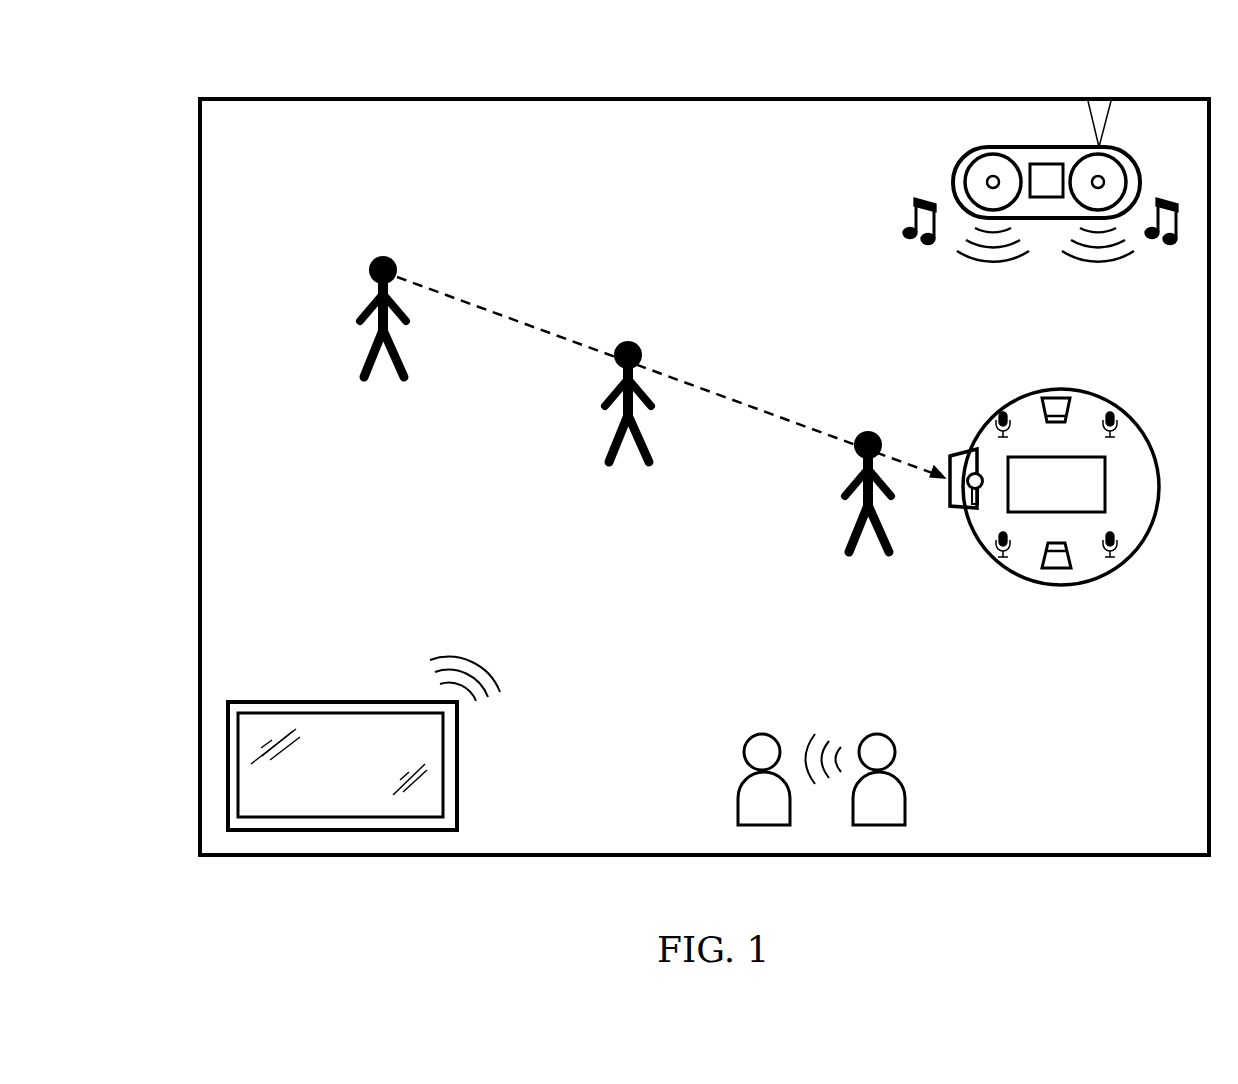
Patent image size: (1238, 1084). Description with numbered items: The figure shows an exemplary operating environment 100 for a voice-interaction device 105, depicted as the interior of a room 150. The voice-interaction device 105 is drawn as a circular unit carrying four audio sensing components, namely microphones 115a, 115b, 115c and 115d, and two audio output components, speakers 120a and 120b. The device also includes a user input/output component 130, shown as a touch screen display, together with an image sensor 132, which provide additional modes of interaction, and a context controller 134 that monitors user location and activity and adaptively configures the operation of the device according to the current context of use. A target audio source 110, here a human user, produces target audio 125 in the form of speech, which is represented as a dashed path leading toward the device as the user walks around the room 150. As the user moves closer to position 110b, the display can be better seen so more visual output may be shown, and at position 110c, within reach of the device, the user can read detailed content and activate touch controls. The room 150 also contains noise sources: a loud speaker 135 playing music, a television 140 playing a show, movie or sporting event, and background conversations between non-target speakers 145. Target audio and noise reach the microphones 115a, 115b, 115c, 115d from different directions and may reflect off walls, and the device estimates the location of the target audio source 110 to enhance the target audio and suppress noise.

The operating environment 100 is at (173, 86).
The voice-interaction device 105 is at (1054, 388).
The target audio source 110 is at (366, 274).
The position of target audio source 110b is at (636, 341).
The position of target audio source 110c is at (868, 431).
The microphone 115a is at (998, 425).
The microphone 115b is at (1110, 412).
The microphone 115c is at (1003, 556).
The microphone 115d is at (1100, 552).
The speaker 120a is at (1042, 405).
The speaker 120b is at (1057, 569).
The target audio 125 is at (478, 303).
The user input/output component 130 is at (960, 499).
The image sensor 132 is at (973, 506).
The context controller 134 is at (1106, 486).
The loud speaker 135 is at (992, 148).
The television 140 is at (340, 702).
The non-target speakers 145 is at (895, 776).
The room 150 is at (805, 99).